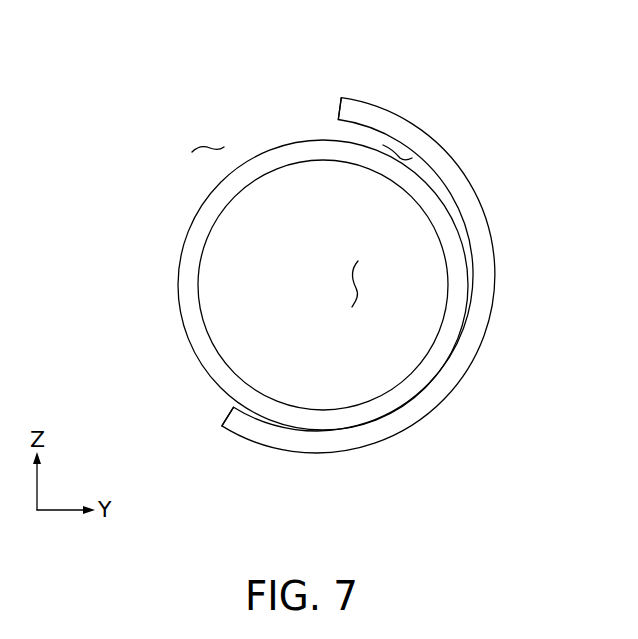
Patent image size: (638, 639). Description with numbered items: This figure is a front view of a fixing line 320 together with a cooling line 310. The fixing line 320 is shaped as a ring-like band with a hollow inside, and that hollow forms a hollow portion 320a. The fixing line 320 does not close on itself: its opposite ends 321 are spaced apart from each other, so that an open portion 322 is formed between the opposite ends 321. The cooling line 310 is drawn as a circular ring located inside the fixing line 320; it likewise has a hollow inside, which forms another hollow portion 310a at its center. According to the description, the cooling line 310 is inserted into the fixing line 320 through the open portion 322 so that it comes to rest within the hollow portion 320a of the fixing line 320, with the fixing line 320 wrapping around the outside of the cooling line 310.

The cooling line 310 is at (447, 331).
The hollow portion 310a is at (357, 283).
The fixing line 320 is at (470, 180).
The hollow portion 320a is at (398, 152).
The opposite ends 321 is at (327, 99).
The open portion 322 is at (210, 148).